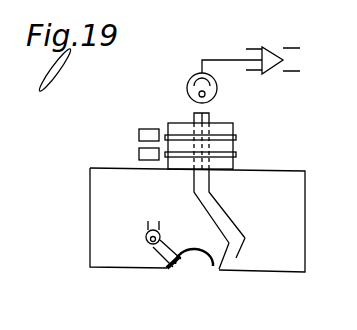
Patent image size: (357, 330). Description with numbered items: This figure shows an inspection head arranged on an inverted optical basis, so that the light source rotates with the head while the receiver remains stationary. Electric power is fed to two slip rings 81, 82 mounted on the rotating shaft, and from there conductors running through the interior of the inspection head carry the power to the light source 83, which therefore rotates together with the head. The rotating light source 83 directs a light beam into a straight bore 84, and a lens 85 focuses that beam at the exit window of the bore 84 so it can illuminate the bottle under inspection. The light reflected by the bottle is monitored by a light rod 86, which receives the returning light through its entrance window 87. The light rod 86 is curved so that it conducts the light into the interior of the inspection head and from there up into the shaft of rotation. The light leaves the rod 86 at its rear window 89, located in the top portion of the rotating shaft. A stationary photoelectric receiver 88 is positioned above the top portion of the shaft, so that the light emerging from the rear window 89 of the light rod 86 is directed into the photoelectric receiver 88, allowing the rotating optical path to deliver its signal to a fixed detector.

The slip ring 81 is at (237, 137).
The slip ring 82 is at (237, 153).
The light source 83 is at (146, 236).
The straight bore 84 is at (162, 254).
The lens 85 is at (177, 270).
The light rod 86 is at (246, 240).
The entrance window 87 is at (209, 268).
The photoelectric receiver 88 is at (191, 80).
The rear window 89 is at (208, 111).